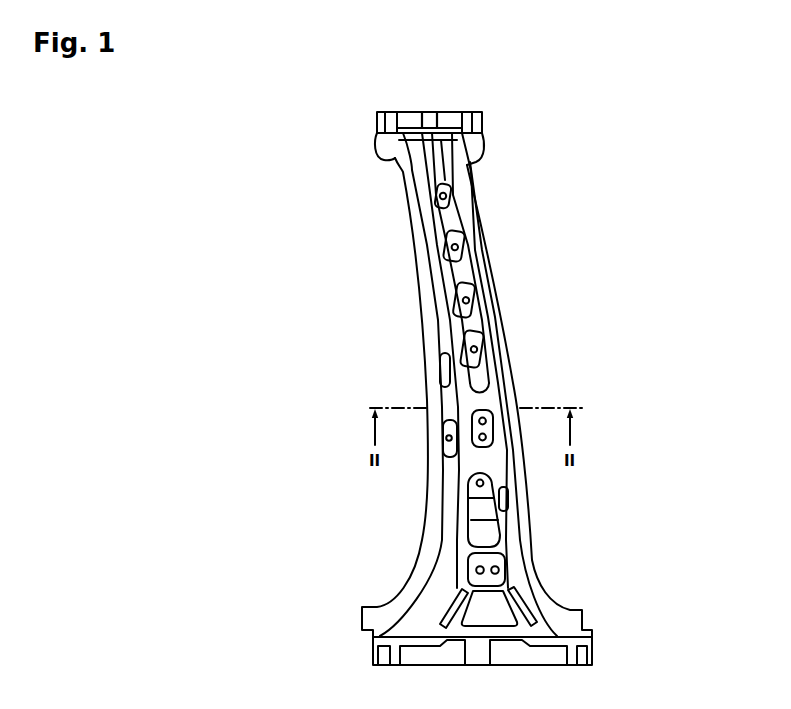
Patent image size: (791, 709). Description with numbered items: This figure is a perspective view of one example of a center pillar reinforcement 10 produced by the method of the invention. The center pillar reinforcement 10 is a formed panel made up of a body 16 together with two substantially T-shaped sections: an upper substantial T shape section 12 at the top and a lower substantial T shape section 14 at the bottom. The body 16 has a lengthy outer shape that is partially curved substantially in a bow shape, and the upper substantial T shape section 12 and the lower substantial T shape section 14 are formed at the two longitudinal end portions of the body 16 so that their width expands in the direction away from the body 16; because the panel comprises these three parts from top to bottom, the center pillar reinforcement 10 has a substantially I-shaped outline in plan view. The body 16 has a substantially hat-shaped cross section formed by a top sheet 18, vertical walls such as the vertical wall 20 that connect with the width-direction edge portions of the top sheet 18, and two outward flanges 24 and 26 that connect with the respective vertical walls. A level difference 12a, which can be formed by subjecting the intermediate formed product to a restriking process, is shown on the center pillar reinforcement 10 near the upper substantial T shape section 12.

The center pillar reinforcement 10 is at (570, 224).
The upper substantial T shape section 12 is at (418, 121).
The level difference 12a is at (457, 139).
The lower substantial T shape section 14 is at (475, 614).
The body 16 is at (470, 376).
The top sheet 18 is at (488, 397).
The vertical wall 20 is at (452, 468).
The outward flange 24 is at (427, 322).
The outward flange 26 is at (500, 313).